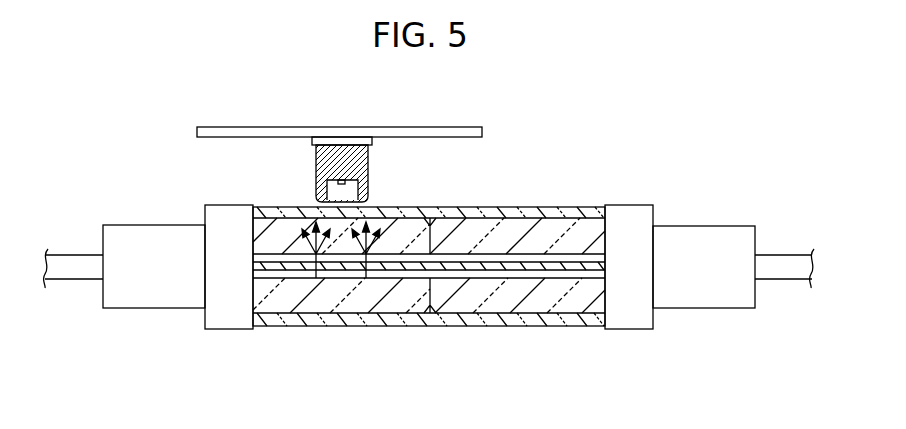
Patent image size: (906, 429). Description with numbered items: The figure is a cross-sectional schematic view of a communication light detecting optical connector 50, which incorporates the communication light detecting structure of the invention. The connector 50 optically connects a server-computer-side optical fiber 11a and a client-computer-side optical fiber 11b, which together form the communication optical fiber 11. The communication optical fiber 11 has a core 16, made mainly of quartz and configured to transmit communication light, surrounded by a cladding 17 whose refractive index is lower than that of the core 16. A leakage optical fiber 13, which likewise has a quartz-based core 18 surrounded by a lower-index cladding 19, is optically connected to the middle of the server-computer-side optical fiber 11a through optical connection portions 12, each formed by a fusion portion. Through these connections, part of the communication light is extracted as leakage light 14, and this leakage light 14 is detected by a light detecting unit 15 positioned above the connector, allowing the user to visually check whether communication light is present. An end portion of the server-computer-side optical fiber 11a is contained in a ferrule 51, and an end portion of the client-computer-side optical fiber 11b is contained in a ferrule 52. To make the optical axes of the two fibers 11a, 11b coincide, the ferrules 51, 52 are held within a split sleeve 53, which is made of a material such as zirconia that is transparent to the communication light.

The communication light detecting optical connector 50 is at (172, 204).
The communication optical fiber 11 is at (428, 328).
The server-computer-side optical fiber 11a is at (73, 275).
The client-computer-side optical fiber 11b is at (783, 273).
The optical connection portion 12 is at (316, 254).
The leakage optical fiber 13 is at (346, 332).
The leakage light 14 is at (372, 253).
The light detecting unit 15 is at (372, 168).
The core 16 is at (488, 268).
The cladding 17 is at (550, 274).
The core 18 is at (319, 279).
The cladding 19 is at (352, 279).
The ferrule 51 is at (275, 303).
The ferrule 52 is at (585, 292).
The split sleeve 53 is at (550, 212).